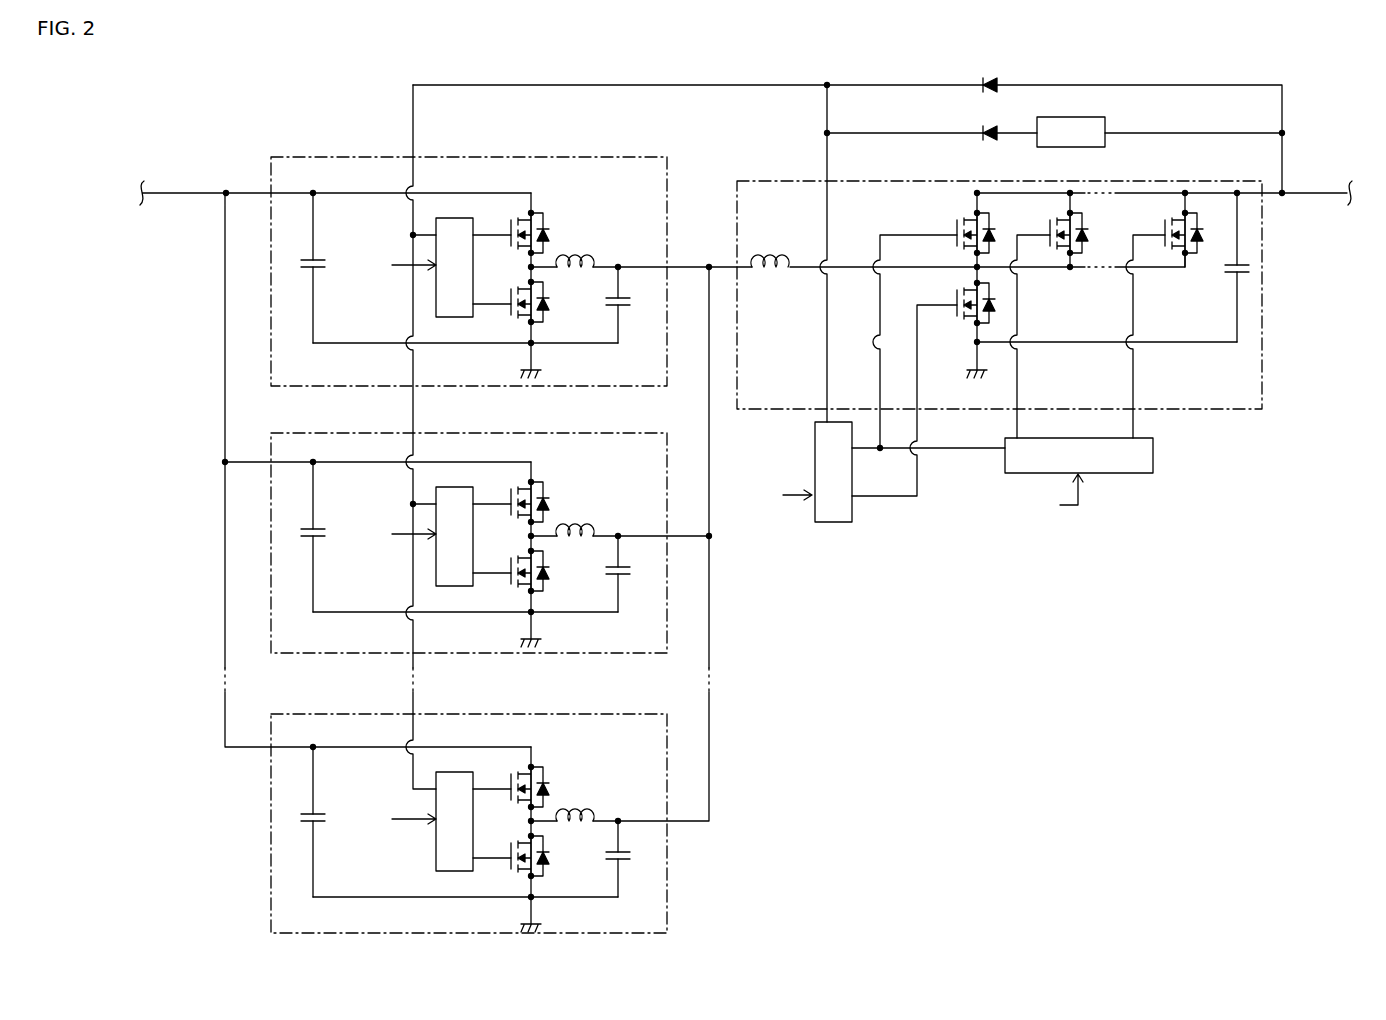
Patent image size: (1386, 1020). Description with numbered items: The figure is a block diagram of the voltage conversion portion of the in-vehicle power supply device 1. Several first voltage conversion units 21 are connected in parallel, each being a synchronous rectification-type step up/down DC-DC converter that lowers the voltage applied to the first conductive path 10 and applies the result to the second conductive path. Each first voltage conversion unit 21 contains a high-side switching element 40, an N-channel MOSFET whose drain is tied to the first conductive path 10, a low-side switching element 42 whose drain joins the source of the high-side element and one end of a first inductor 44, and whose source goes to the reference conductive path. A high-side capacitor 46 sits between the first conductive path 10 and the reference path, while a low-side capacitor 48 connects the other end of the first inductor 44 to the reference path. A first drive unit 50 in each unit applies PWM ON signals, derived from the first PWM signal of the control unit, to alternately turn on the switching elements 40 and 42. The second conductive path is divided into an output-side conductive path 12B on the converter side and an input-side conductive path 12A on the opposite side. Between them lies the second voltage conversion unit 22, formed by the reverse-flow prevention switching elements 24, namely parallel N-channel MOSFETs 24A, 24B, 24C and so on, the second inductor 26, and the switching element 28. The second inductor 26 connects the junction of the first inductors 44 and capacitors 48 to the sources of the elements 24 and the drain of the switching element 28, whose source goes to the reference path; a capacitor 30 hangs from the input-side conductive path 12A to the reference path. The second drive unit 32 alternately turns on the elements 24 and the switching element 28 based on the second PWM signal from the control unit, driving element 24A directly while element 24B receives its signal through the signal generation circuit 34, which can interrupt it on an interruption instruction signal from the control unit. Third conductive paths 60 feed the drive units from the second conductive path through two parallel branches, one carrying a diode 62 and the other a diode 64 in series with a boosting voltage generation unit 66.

The power supply device 1 is at (1319, 68).
The first conductive path 10 is at (170, 192).
The input-side conductive path 12A is at (1303, 193).
The output-side conductive path 12B is at (687, 267).
The first voltage conversion unit 21 is at (612, 157).
The second voltage conversion unit 22 is at (1262, 337).
The reverse-flow prevention switching elements 24 is at (1068, 297).
The semiconductor switching element 24A is at (965, 213).
The semiconductor switching element 24B is at (1058, 213).
The semiconductor switching element 24C is at (1178, 213).
The second inductor 26 is at (770, 262).
The switching element 28 is at (970, 325).
The capacitor 30 is at (1248, 262).
The second drive unit 32 is at (833, 525).
The signal generation circuit 34 is at (1137, 475).
The high-side switching element 40 is at (523, 255).
The low-side switching element 42 is at (523, 320).
The first inductor 44 is at (572, 258).
The high-side capacitor 46 is at (320, 258).
The low-side capacitor 48 is at (623, 308).
The first drive unit 50 is at (455, 218).
The third conductive path 60 is at (1215, 85).
The diode 62 is at (986, 68).
The diode 64 is at (984, 116).
The voltage generation unit 66 is at (1107, 122).